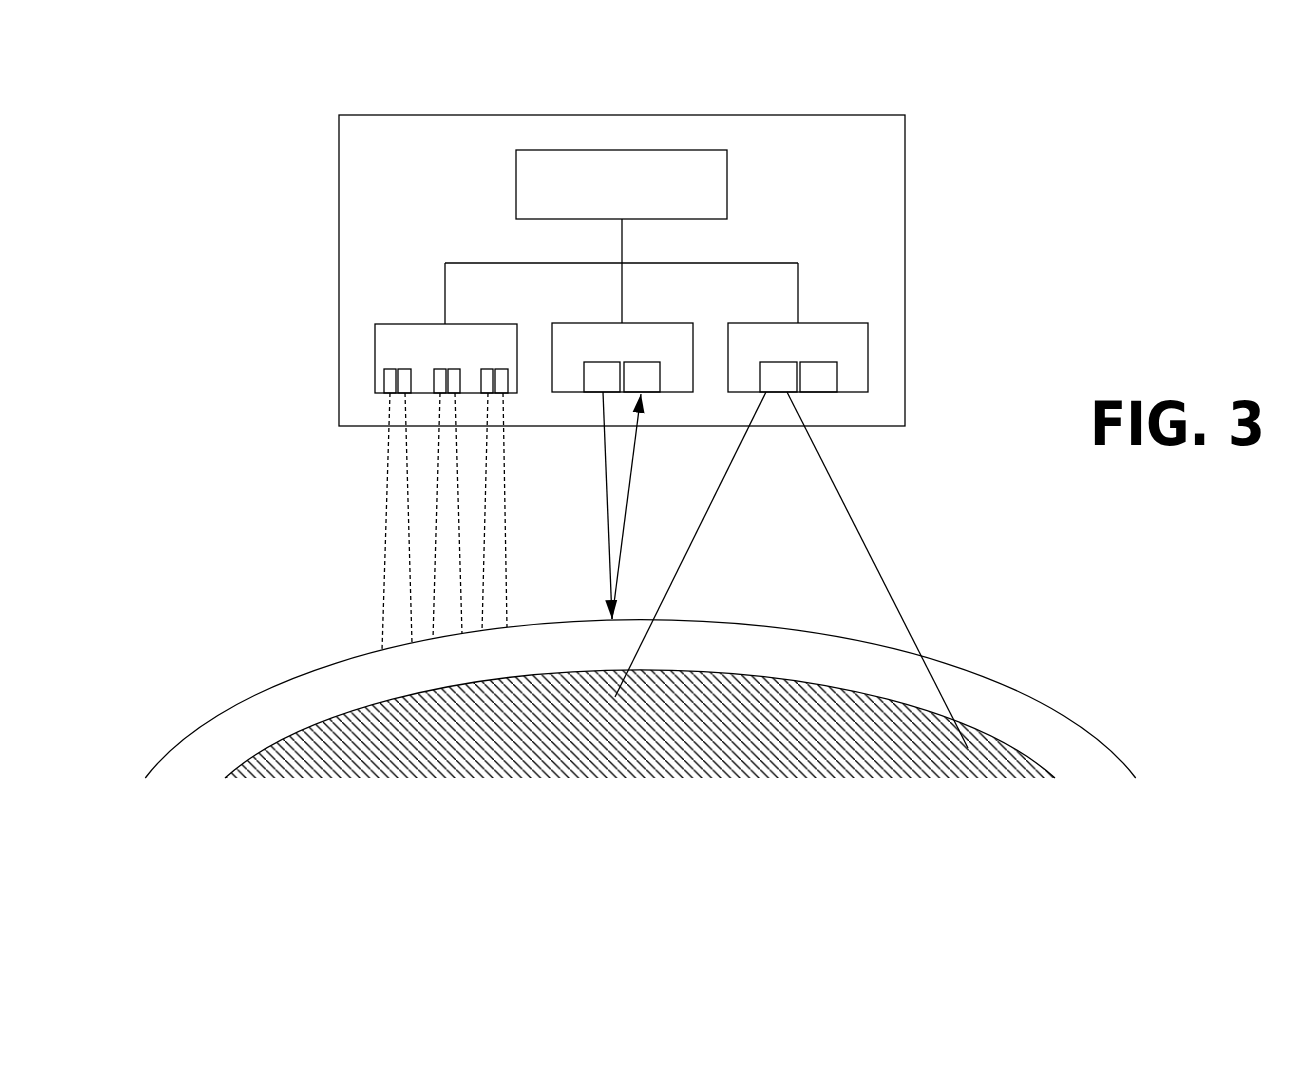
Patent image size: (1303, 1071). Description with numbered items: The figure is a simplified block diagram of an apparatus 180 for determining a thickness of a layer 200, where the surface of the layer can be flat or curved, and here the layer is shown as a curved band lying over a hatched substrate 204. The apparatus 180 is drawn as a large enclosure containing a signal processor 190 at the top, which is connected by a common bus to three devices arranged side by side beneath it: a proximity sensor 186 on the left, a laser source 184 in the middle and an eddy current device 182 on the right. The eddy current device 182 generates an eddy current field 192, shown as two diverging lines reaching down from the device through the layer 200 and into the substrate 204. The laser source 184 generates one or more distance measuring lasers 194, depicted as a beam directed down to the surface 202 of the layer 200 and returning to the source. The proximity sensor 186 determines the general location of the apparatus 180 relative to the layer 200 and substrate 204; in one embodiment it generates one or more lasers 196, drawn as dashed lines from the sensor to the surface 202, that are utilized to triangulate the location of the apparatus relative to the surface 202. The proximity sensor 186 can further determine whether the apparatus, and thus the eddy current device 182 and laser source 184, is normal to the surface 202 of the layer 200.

The apparatus 180 is at (628, 218).
The signal processor 190 is at (533, 150).
The proximity sensor 186 is at (421, 324).
The laser source 184 is at (648, 323).
The eddy current device 182 is at (852, 347).
The lasers 196 is at (368, 521).
The distance measuring lasers 194 is at (590, 505).
The eddy current field 192 is at (812, 570).
The surface 202 is at (281, 684).
The layer 200 is at (597, 714).
The substrate 204 is at (570, 724).